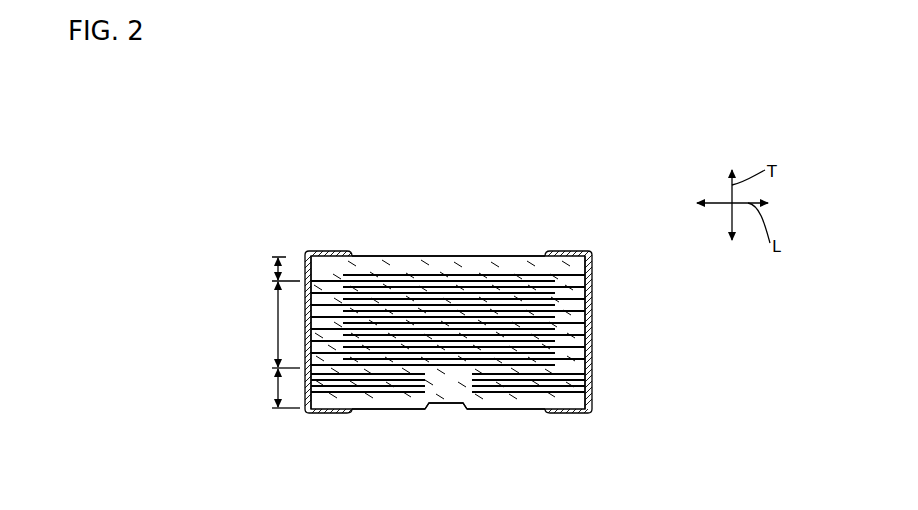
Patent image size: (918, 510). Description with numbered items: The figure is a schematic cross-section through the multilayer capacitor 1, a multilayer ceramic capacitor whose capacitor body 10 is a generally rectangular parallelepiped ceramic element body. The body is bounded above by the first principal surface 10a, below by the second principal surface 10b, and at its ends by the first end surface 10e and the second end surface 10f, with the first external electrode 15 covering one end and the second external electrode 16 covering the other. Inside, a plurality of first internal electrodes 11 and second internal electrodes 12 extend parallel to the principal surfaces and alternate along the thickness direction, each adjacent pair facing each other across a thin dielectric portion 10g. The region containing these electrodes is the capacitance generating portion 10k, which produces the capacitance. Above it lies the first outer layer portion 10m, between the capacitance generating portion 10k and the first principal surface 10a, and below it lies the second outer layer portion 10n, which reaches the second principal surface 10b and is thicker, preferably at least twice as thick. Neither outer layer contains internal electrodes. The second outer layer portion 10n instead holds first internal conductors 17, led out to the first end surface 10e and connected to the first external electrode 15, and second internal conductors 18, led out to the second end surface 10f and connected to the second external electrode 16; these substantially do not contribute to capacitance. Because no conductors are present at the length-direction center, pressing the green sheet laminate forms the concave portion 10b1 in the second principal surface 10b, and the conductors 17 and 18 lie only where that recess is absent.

The multilayer capacitor 1 is at (610, 214).
The capacitor body 10 is at (505, 255).
The first principal surface 10a is at (381, 256).
The second principal surface 10b is at (384, 411).
The concave portion 10b1 is at (446, 404).
The first end surface 10e is at (305, 265).
The second end surface 10f is at (593, 365).
The dielectric portion 10g is at (447, 272).
The capacitance generating portion 10k is at (266, 325).
The first outer layer portion 10m is at (263, 269).
The second outer layer portion 10n is at (264, 388).
The first internal electrodes 11 is at (372, 362).
The second internal electrodes 12 is at (490, 370).
The first external electrode 15 is at (341, 252).
The second external electrode 16 is at (593, 310).
The first internal conductors 17 is at (333, 400).
The second internal conductors 18 is at (558, 398).